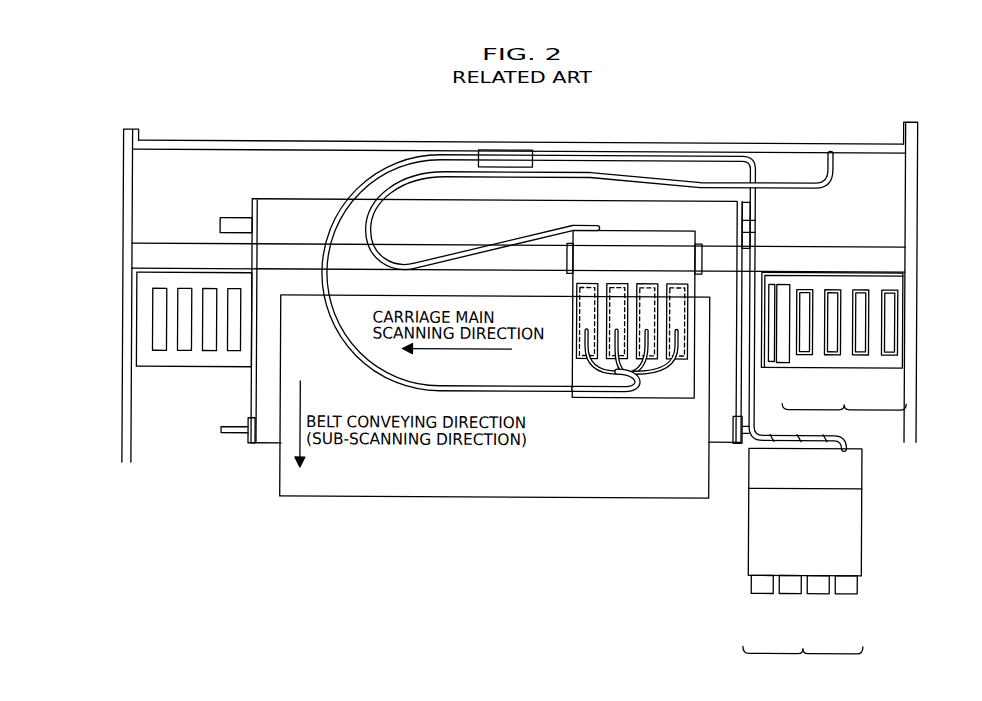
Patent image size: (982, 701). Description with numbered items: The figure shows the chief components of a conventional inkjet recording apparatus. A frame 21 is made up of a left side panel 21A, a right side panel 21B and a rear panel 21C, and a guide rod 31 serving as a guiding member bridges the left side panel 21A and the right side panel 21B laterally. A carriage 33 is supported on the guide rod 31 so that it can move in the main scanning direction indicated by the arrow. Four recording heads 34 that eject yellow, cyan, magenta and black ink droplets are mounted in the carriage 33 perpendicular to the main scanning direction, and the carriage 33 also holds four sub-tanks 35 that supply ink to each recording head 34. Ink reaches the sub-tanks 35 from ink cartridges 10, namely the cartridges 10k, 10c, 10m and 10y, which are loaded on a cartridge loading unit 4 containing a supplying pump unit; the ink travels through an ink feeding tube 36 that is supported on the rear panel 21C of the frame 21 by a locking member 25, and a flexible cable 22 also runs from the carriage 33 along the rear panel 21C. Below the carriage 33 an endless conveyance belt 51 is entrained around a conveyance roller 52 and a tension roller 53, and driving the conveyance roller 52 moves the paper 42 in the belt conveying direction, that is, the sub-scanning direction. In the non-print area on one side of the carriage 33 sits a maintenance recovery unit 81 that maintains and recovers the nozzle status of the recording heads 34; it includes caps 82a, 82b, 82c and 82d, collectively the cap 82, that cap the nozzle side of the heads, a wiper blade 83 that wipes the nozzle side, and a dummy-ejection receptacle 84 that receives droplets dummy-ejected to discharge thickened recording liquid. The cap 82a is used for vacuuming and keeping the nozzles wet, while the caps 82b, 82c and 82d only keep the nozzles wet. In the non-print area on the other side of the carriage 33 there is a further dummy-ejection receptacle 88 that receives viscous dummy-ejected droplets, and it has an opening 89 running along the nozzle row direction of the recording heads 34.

The frame 21 is at (157, 107).
The left side panel 21A is at (122, 185).
The right side panel 21B is at (917, 187).
The rear panel 21C is at (778, 143).
The flexible cable 22 is at (631, 183).
The locking member 25 is at (506, 150).
The guide rod 31 is at (185, 243).
The carriage 33 is at (676, 392).
The recording head 34 is at (590, 283).
The sub-tank 35 is at (596, 384).
The ink feeding tube 36 is at (362, 188).
The paper 42 is at (423, 497).
The conveyance belt 51 is at (298, 200).
The conveyance roller 52 is at (756, 205).
The tension roller 53 is at (248, 437).
The maintenance recovery unit 81 is at (904, 322).
The cap 82 is at (844, 419).
The cap 82a is at (805, 354).
The cap 82b is at (833, 354).
The cap 82c is at (861, 354).
The cap 82d is at (890, 354).
The wiper blade 83 is at (771, 282).
The dummy-ejection receptacle 84 is at (785, 283).
The dummy-ejection receptacle 88 is at (163, 358).
The opening 89 is at (185, 346).
The cartridge loading unit 4 is at (866, 515).
The ink cartridge 10 is at (803, 662).
The ink cartridge 10k is at (764, 592).
The ink cartridge 10c is at (792, 592).
The ink cartridge 10m is at (820, 592).
The ink cartridge 10y is at (848, 592).